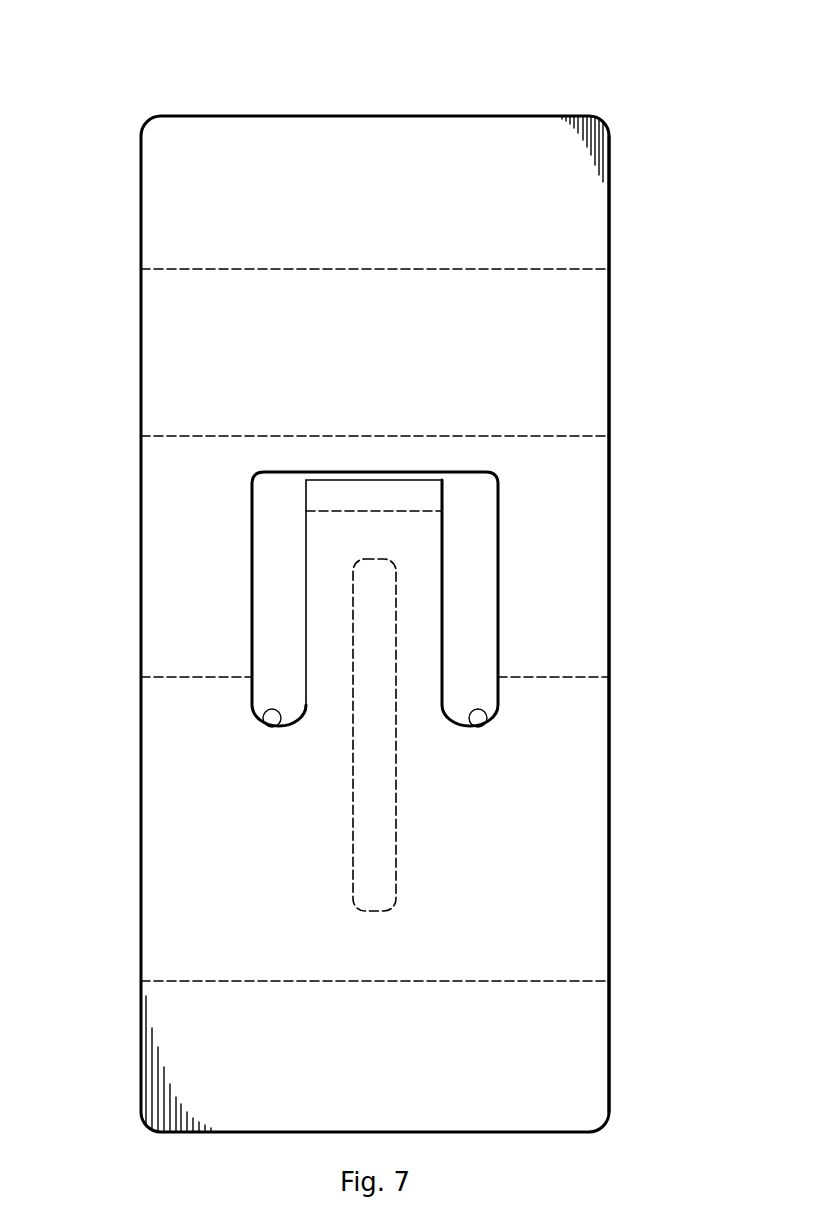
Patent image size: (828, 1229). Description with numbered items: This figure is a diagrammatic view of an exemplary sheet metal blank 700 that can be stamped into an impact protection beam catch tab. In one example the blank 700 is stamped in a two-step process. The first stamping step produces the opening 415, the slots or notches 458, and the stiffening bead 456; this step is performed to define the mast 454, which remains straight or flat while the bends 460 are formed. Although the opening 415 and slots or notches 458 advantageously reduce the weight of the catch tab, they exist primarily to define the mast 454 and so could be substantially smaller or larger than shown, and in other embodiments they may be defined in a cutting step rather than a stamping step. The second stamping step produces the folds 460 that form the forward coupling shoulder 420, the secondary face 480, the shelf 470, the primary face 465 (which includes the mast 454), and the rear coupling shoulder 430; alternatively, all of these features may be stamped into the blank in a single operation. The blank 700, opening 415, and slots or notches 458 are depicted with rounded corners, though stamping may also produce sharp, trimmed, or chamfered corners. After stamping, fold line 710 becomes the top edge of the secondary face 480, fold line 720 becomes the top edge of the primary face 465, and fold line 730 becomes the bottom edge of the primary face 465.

The sheet metal blank 700 is at (244, 64).
The forward coupling shoulder 420 is at (598, 200).
The rear coupling shoulder 430 is at (598, 1058).
The secondary face 480 is at (598, 357).
The shelf 470 is at (598, 543).
The primary face 465 is at (598, 844).
The fold line 710 is at (547, 268).
The fold line 720 is at (545, 676).
The fold line 730 is at (547, 980).
The folds 460 is at (136, 269).
The opening 415 is at (480, 578).
The mast 454 is at (321, 585).
The stiffening bead 456 is at (396, 857).
The slots or notches 458 is at (272, 727).